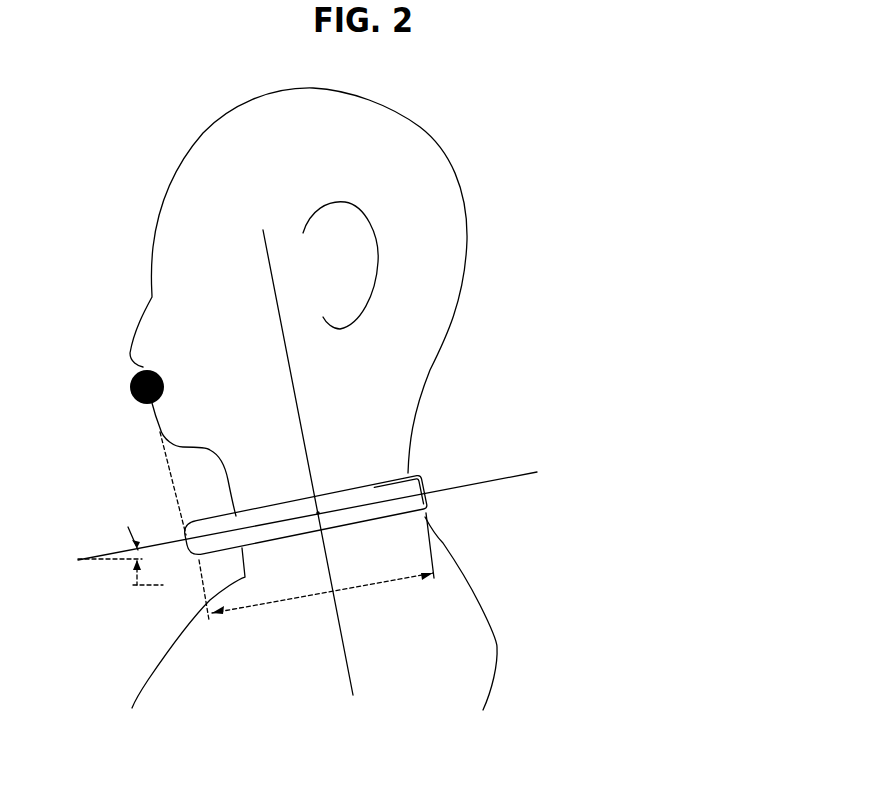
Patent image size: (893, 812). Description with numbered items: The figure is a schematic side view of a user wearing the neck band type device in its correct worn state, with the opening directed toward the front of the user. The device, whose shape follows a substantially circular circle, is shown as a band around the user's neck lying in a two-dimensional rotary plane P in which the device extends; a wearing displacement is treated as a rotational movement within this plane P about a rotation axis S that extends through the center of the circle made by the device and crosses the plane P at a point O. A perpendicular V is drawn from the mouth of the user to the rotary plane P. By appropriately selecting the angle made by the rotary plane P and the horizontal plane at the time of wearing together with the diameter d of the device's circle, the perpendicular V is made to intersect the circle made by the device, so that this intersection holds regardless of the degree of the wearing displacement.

The rotation axis S is at (272, 263).
The rotary plane P is at (397, 494).
The intersection point of rotation axis and rotary plane O is at (318, 513).
The perpendicular V is at (168, 467).
The diameter d is at (316, 566).